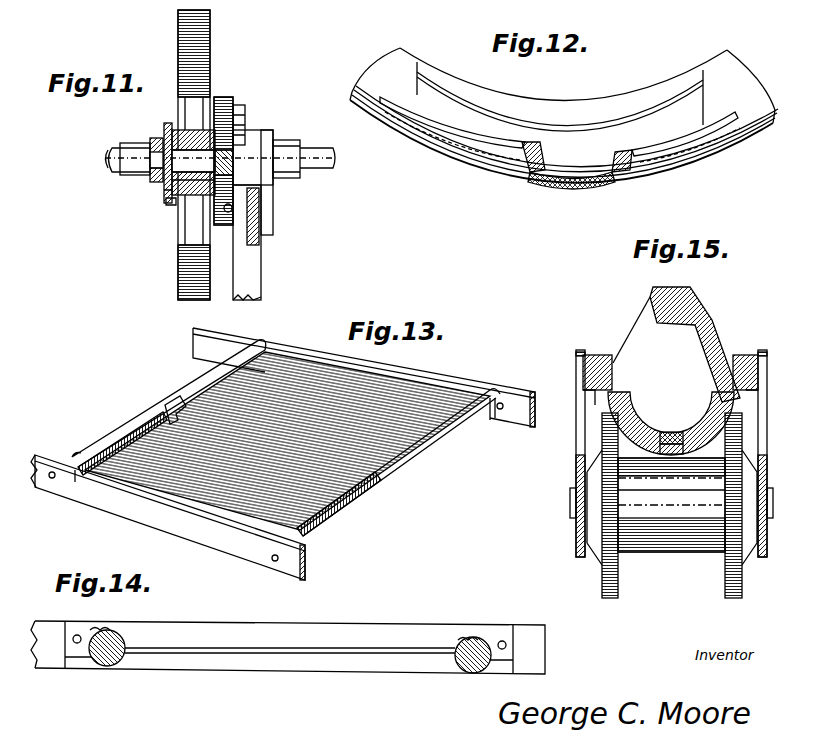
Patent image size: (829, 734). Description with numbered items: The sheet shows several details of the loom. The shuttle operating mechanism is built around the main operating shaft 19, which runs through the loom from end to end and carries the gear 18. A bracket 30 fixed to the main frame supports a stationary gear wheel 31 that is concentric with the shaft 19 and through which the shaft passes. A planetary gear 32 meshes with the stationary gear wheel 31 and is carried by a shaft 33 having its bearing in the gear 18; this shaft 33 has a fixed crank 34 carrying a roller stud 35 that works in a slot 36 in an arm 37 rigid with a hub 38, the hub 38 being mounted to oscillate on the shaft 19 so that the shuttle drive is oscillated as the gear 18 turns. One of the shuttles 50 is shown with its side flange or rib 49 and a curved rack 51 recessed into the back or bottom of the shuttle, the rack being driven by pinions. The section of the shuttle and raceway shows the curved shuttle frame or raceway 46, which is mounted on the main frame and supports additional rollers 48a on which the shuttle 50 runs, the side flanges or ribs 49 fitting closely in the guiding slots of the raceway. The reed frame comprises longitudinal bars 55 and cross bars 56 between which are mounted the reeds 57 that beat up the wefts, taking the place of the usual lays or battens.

In FIG. 11, the gear 18 is at (210, 58).
In FIG. 11, the main operating shaft 19 is at (312, 170).
In FIG. 11, the bracket 30 is at (250, 136).
In FIG. 11, the stationary gear wheel 31 is at (233, 100).
In FIG. 11, the planetary gear 32 is at (232, 208).
In FIG. 11, the shaft 33 is at (172, 190).
In FIG. 11, the fixed crank 34 is at (167, 125).
In FIG. 11, the roller stud 35 is at (150, 140).
In FIG. 11, the slot 36 is at (156, 178).
In FIG. 11, the arm 37 is at (158, 136).
In FIG. 11, the hub 38 is at (110, 152).
In FIG. 15, the shuttle frame or raceway 46 is at (576, 540).
In FIG. 15, the additional roller 48a is at (656, 548).
In FIG. 12, the side flange or rib 49 is at (668, 146).
In FIG. 15, the side flange or rib 49 is at (600, 392).
In FIG. 12, the shuttle 50 is at (727, 58).
In FIG. 15, the shuttle 50 is at (707, 318).
In FIG. 12, the curved rack 51 is at (565, 180).
In FIG. 15, the curved rack 51 is at (674, 430).
In FIG. 13, the longitudinal bar 55 is at (514, 392).
In FIG. 14, the longitudinal bar 55 is at (408, 632).
In FIG. 13, the cross bar 56 is at (190, 387).
In FIG. 14, the cross bar 56 is at (93, 660).
In FIG. 13, the reed 57 is at (415, 402).
In FIG. 14, the reed 57 is at (342, 655).